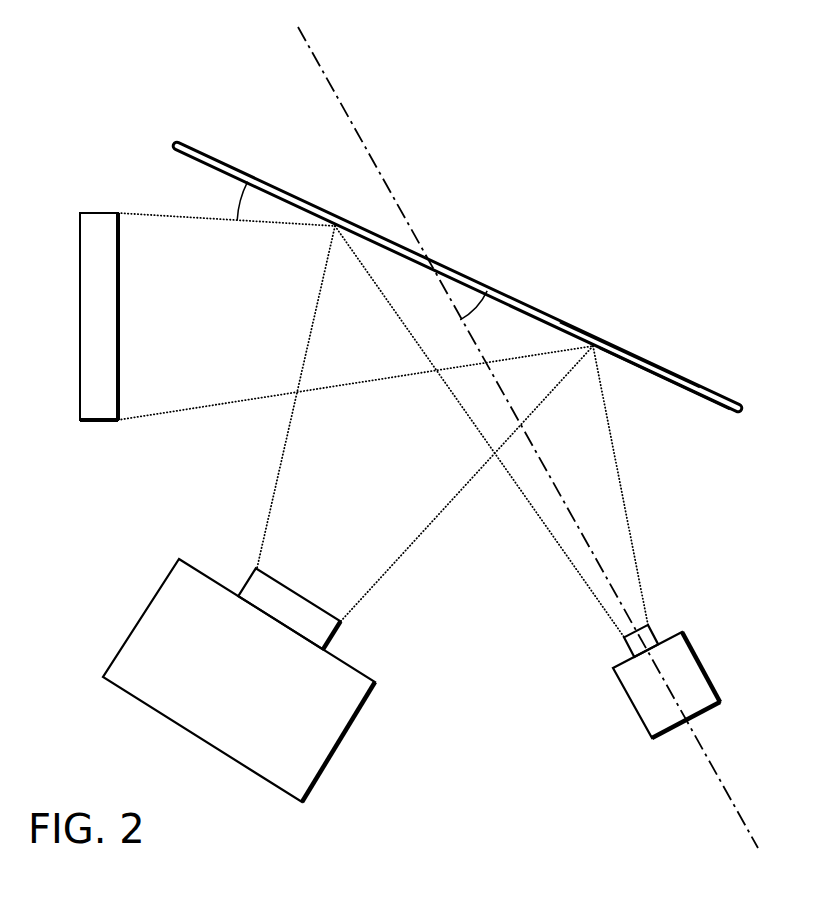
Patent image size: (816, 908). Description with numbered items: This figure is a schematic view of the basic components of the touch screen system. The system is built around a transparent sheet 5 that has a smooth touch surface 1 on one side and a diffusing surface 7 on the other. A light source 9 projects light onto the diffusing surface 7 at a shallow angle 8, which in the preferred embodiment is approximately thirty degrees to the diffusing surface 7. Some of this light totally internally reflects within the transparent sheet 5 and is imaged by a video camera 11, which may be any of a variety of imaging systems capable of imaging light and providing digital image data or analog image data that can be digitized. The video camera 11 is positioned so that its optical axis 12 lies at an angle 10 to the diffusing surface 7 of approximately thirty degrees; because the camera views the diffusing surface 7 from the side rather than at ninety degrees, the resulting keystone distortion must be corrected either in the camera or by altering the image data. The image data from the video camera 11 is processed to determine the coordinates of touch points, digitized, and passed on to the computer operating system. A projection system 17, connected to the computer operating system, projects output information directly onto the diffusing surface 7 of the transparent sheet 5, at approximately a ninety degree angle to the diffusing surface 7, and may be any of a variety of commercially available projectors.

The touch surface 1 is at (693, 383).
The transparent sheet 5 is at (177, 141).
The diffusing surface 7 is at (713, 408).
The shallow angle 8 is at (240, 199).
The light source 9 is at (80, 284).
The angle 10 is at (480, 304).
The video camera 11 is at (690, 647).
The optical axis 12 is at (732, 794).
The projection system 17 is at (132, 700).